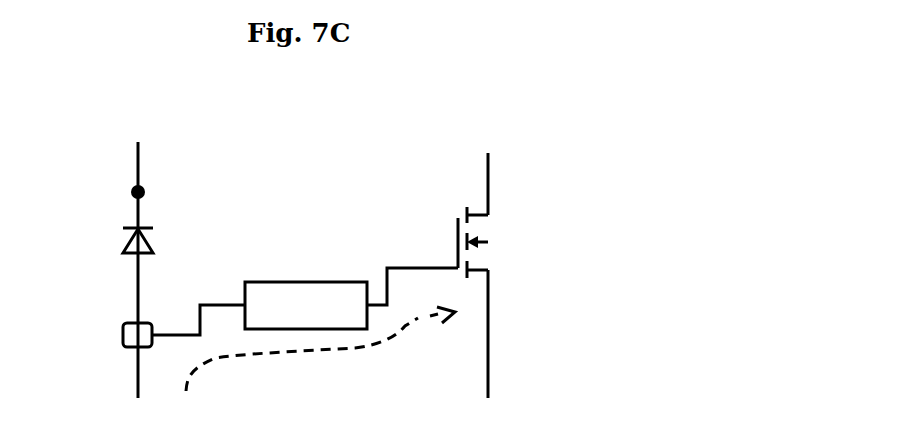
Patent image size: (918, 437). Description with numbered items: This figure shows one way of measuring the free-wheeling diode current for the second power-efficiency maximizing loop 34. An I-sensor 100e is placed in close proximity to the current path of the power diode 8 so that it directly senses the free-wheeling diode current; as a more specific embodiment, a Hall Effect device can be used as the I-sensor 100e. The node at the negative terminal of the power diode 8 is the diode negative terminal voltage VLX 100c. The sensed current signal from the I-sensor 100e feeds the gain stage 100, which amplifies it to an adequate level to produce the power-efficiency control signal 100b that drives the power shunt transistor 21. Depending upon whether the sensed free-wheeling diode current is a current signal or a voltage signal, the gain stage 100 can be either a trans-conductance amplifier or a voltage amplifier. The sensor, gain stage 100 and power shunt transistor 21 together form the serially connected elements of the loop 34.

The power diode 8 is at (123, 233).
The power shunt transistor 21 is at (490, 228).
The second power-efficiency maximizing loop 34 is at (413, 318).
The gain stage 100 is at (296, 282).
The power-efficiency control signal 100b is at (459, 232).
The diode negative terminal voltage VLX 100c is at (141, 196).
The I-sensor 100e is at (125, 333).